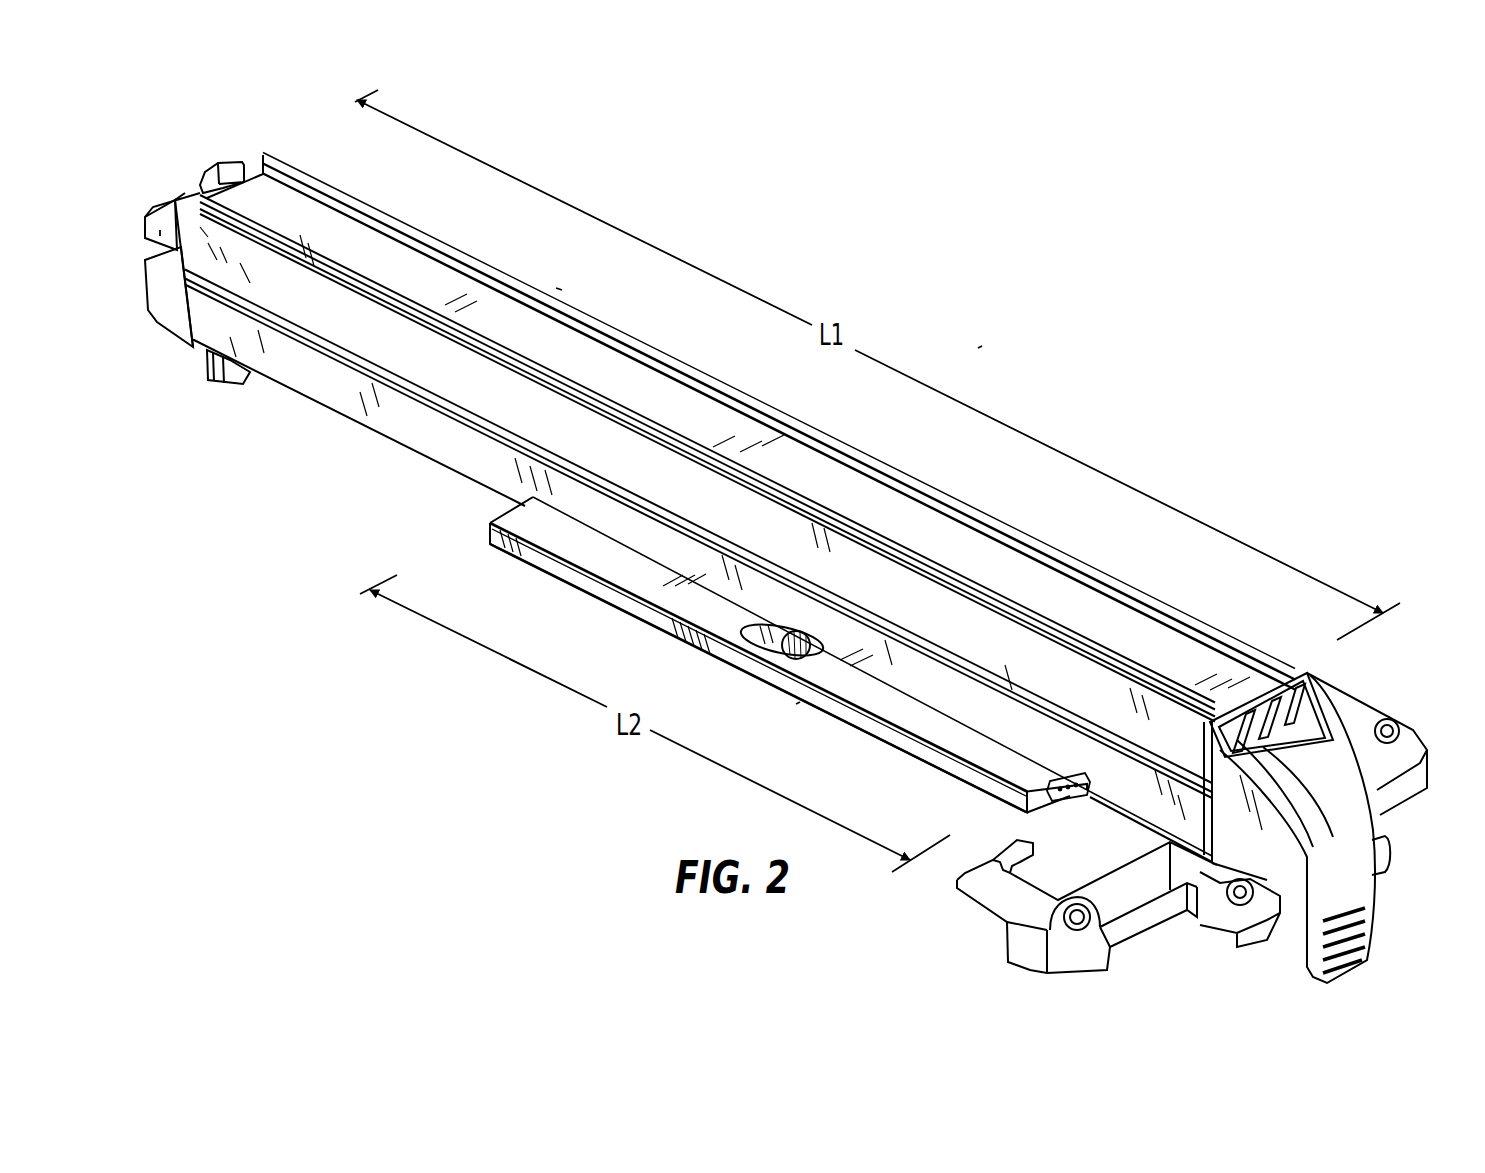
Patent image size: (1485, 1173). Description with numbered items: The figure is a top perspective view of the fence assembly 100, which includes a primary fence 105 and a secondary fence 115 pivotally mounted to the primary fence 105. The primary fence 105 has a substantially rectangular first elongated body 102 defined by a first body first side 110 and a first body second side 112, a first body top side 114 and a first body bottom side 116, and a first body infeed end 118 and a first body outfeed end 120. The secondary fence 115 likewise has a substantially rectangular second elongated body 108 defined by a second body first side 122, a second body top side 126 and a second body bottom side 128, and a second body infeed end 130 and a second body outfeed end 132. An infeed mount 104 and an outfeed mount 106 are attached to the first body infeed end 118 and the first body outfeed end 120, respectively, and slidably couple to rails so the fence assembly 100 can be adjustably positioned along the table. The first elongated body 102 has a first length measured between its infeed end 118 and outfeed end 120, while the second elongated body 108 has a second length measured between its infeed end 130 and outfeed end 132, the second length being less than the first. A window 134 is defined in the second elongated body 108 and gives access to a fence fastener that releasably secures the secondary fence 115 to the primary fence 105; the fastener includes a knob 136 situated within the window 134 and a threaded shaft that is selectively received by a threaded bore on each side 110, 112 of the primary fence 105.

The fence assembly 100 is at (981, 344).
The first elongated body 102 is at (583, 306).
The infeed mount 104 is at (1398, 898).
The primary fence 105 is at (557, 284).
The outfeed mount 106 is at (200, 146).
The second elongated body 108 is at (921, 750).
The first body first side 110 is at (318, 378).
The first body second side 112 is at (462, 258).
The first body top side 114 is at (341, 240).
The secondary fence 115 is at (795, 705).
The first body bottom side 116 is at (395, 452).
The first body infeed end 118 is at (1243, 696).
The first body outfeed end 120 is at (207, 168).
The second body first side 122 is at (587, 575).
The second body top side 126 is at (590, 505).
The second body bottom side 128 is at (673, 633).
The second body infeed end 130 is at (1050, 768).
The second body outfeed end 132 is at (606, 552).
The window 134 is at (753, 632).
The knob 136 is at (795, 625).